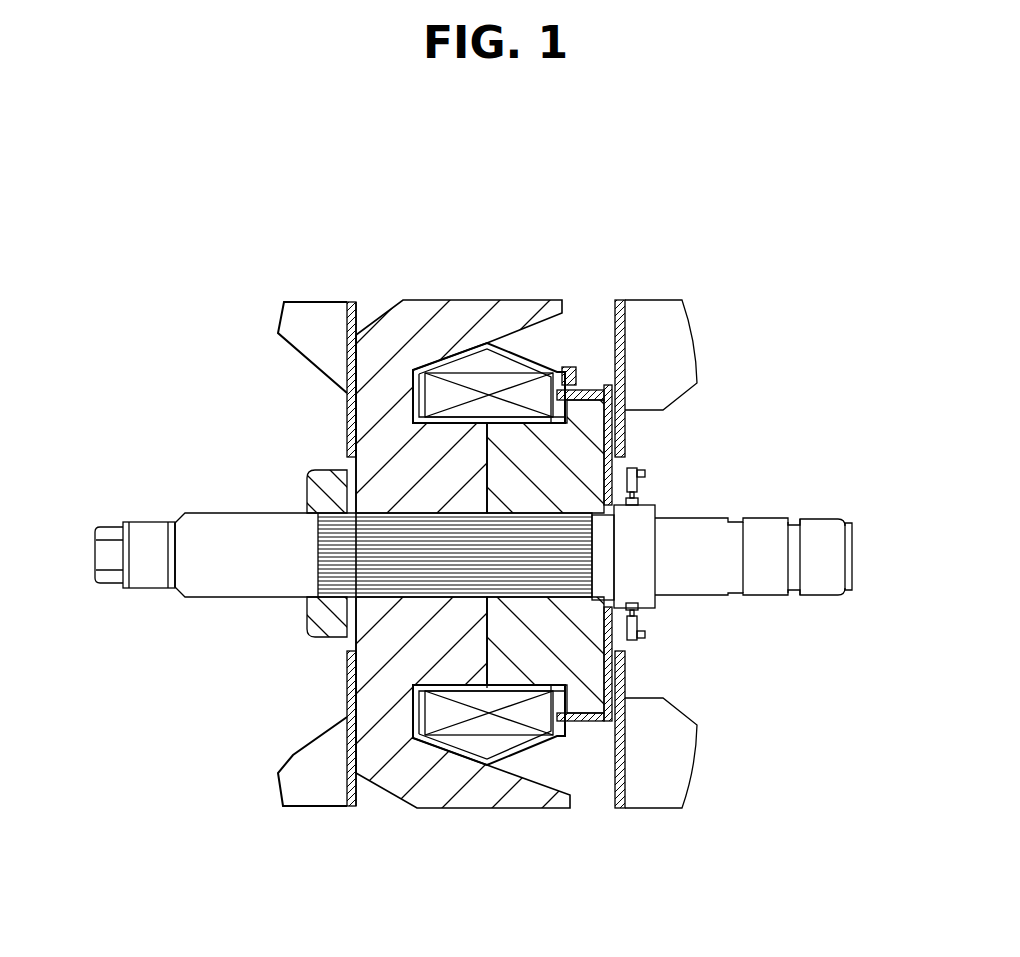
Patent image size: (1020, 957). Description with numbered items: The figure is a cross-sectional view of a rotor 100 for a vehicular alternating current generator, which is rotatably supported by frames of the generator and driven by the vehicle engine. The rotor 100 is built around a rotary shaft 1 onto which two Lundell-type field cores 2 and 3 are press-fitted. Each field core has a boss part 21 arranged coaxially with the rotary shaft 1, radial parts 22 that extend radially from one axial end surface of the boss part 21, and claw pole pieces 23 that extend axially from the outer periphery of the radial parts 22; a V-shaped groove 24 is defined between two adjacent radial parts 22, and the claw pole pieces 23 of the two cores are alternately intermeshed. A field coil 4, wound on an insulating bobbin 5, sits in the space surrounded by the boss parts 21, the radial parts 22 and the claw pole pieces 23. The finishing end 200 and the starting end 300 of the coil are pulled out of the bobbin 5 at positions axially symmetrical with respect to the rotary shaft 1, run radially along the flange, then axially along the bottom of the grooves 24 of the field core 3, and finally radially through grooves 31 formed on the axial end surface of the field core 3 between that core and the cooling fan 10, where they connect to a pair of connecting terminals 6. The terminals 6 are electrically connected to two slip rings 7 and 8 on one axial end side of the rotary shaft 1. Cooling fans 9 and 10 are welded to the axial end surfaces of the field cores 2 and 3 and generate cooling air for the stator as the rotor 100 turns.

The rotary shaft 1 is at (234, 512).
The field core 2 is at (403, 300).
The field core 3 is at (572, 364).
The field coil 4 is at (488, 376).
The insulating bobbin 5 is at (596, 388).
The connecting terminals 6 is at (640, 482).
The slip ring 7 is at (765, 518).
The slip ring 8 is at (823, 519).
The cooling fan 9 is at (308, 301).
The cooling fan 10 is at (640, 312).
The boss part 21 is at (433, 660).
The radial parts 22 is at (384, 682).
The claw pole pieces 23 is at (497, 809).
The V-shaped groove 24 is at (583, 734).
The grooves 31 is at (618, 469).
The rotor 100 is at (688, 185).
The finishing end 200 is at (607, 385).
The starting end 300 is at (568, 760).